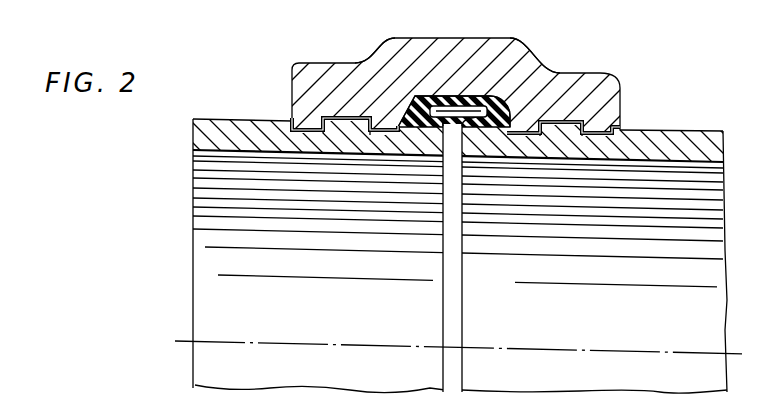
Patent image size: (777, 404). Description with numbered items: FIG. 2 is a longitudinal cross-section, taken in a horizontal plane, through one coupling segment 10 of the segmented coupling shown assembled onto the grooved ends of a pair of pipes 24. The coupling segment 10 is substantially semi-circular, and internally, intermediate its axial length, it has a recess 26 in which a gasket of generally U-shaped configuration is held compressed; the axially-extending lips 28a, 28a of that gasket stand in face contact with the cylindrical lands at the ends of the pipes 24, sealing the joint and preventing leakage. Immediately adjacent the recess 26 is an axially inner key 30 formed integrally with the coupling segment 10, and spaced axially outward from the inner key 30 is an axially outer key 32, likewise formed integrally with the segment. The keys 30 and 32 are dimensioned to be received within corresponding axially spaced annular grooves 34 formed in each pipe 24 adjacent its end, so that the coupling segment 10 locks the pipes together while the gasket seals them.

The coupling segment 10 is at (379, 47).
The pipe 24 is at (207, 122).
The recess 26 is at (487, 102).
The axially-extending lip 28a is at (436, 126).
The axially inner key 30 is at (387, 128).
The axially outer key 32 is at (299, 122).
The annular groove 34 is at (365, 127).